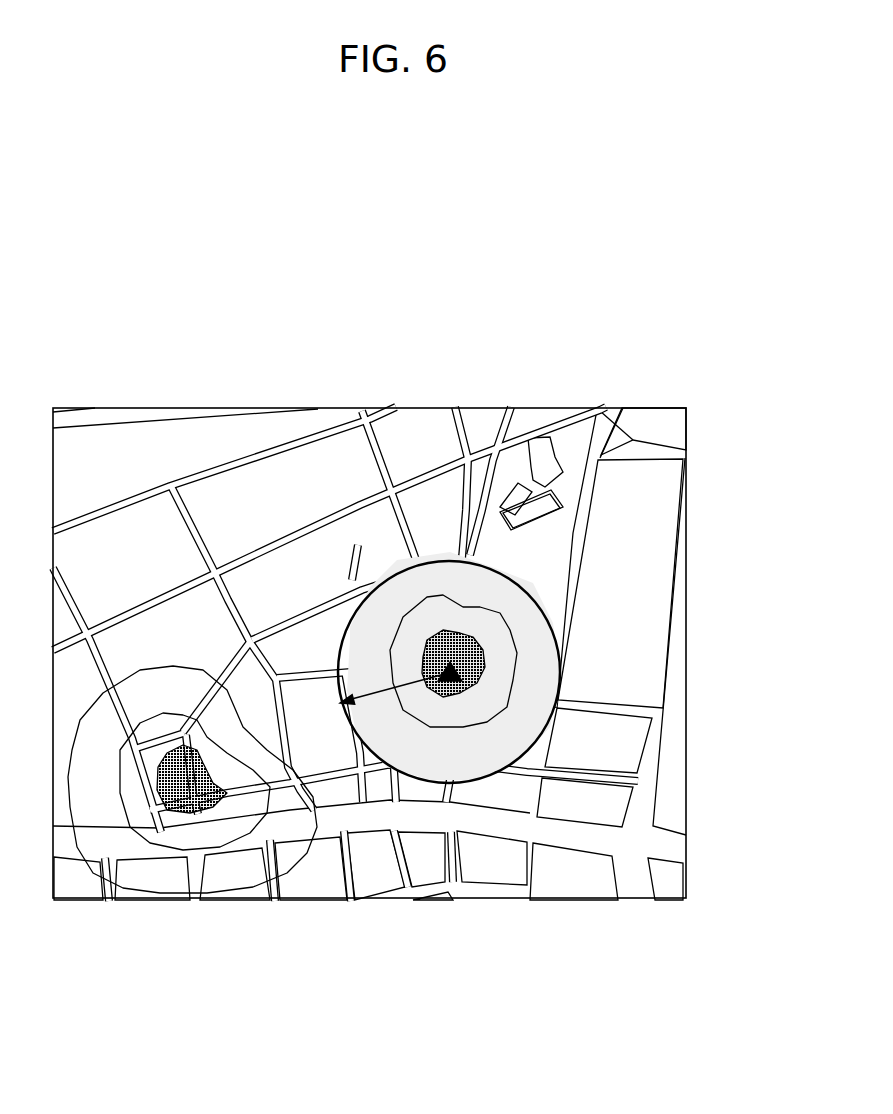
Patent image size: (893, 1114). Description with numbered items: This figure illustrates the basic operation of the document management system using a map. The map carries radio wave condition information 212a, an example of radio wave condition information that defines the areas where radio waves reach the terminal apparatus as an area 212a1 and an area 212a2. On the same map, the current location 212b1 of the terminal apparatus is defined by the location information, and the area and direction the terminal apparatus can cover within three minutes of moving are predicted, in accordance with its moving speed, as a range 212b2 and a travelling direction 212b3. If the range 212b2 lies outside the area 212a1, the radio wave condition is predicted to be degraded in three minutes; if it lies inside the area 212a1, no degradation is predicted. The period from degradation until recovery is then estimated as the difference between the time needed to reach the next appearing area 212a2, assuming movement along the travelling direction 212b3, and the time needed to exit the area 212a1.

The radio wave condition information 212a is at (670, 318).
The area 212a1 is at (548, 598).
The area 212a2 is at (221, 886).
The current location 212b1 is at (462, 673).
The range 212b2 is at (528, 577).
The travelling direction 212b3 is at (368, 702).